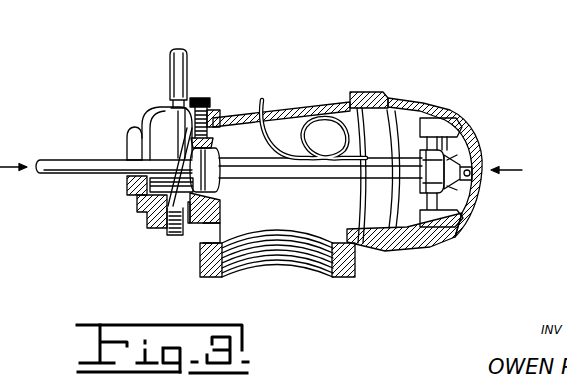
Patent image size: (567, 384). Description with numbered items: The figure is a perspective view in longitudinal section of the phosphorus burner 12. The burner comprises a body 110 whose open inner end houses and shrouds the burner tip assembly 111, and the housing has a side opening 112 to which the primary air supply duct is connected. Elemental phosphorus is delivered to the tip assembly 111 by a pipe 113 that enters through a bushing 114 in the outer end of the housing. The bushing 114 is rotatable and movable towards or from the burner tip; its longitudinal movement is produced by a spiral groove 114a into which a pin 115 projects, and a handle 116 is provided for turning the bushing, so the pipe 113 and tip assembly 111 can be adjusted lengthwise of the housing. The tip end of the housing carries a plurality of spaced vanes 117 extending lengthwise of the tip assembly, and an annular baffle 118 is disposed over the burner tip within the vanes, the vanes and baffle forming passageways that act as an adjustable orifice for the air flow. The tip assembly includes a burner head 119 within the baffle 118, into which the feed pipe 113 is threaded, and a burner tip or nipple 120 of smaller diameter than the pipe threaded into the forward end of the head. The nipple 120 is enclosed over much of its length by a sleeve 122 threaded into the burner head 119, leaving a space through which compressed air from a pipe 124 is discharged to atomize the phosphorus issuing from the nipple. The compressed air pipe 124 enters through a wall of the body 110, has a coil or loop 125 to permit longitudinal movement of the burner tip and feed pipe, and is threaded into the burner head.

The phosphorus burner 12 is at (300, 81).
The body 110 is at (322, 213).
The burner tip assembly 111 is at (511, 161).
The side opening 112 is at (300, 263).
The pipe 113 is at (280, 182).
The bushing 114 is at (147, 218).
The spiral groove 114a is at (133, 195).
The pin 115 is at (178, 238).
The handle 116 is at (189, 62).
The vanes 117 is at (438, 123).
The annular baffle 118 is at (447, 141).
The burner head 119 is at (474, 142).
The burner tip or nipple 120 is at (471, 174).
The sleeve 122 is at (458, 180).
The compressed air pipe 124 is at (260, 100).
The coil or loop 125 is at (318, 103).